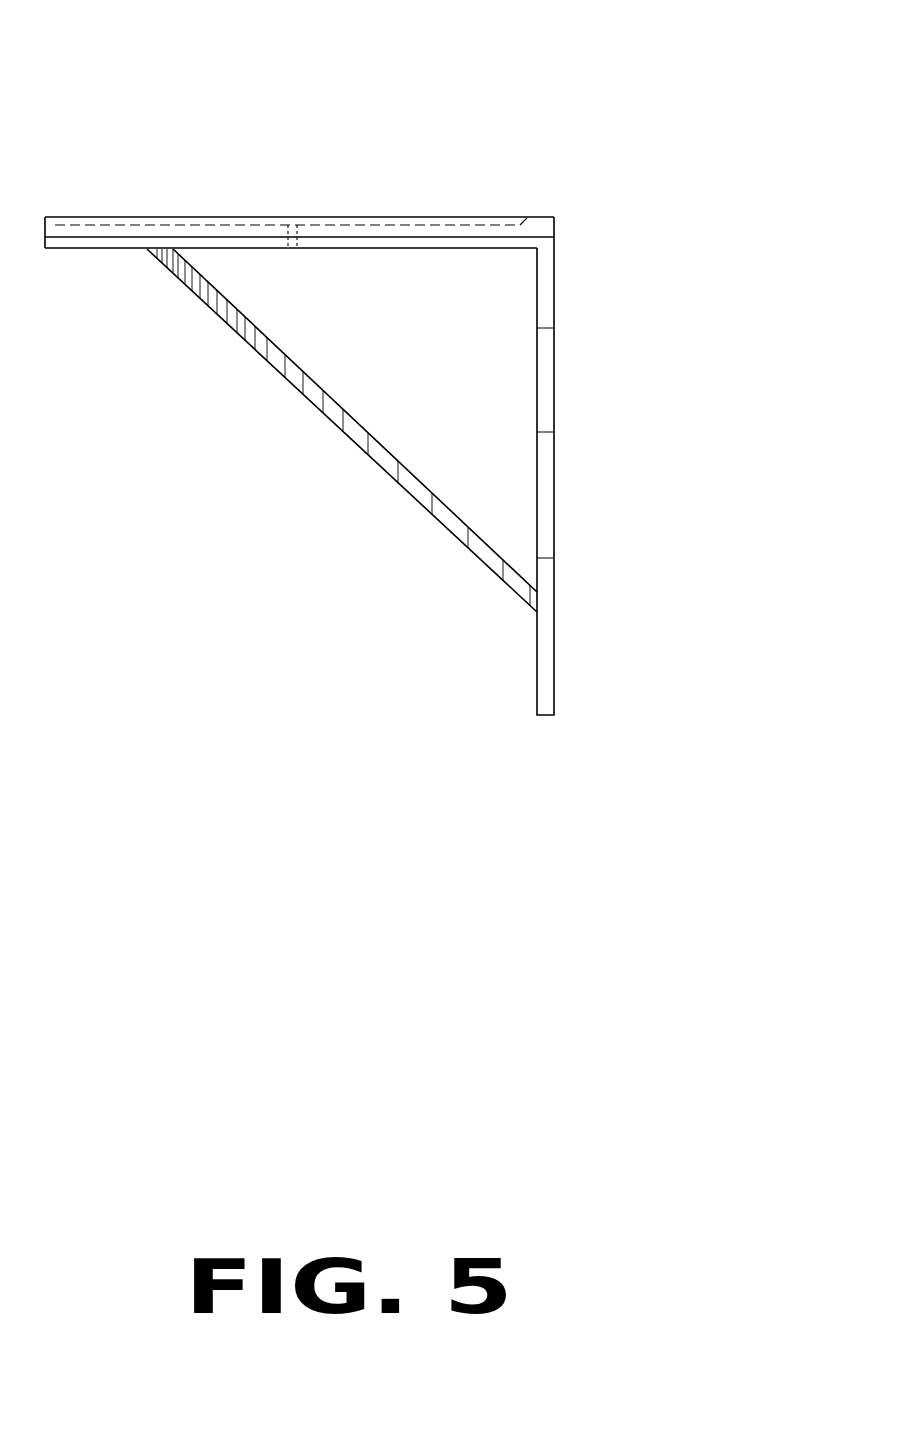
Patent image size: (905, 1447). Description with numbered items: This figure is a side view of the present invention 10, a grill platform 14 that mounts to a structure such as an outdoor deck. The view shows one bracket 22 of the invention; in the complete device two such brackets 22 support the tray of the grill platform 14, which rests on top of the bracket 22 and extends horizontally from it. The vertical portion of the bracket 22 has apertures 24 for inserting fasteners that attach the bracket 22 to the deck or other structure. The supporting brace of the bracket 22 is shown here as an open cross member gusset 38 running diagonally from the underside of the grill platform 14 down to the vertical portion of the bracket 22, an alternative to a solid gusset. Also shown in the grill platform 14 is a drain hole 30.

The present invention 10 is at (553, 182).
The grill platform 14 is at (180, 217).
The bracket 22 is at (547, 666).
The apertures 24 is at (553, 328).
The drain hole 30 is at (293, 225).
The open cross member gusset 38 is at (267, 362).